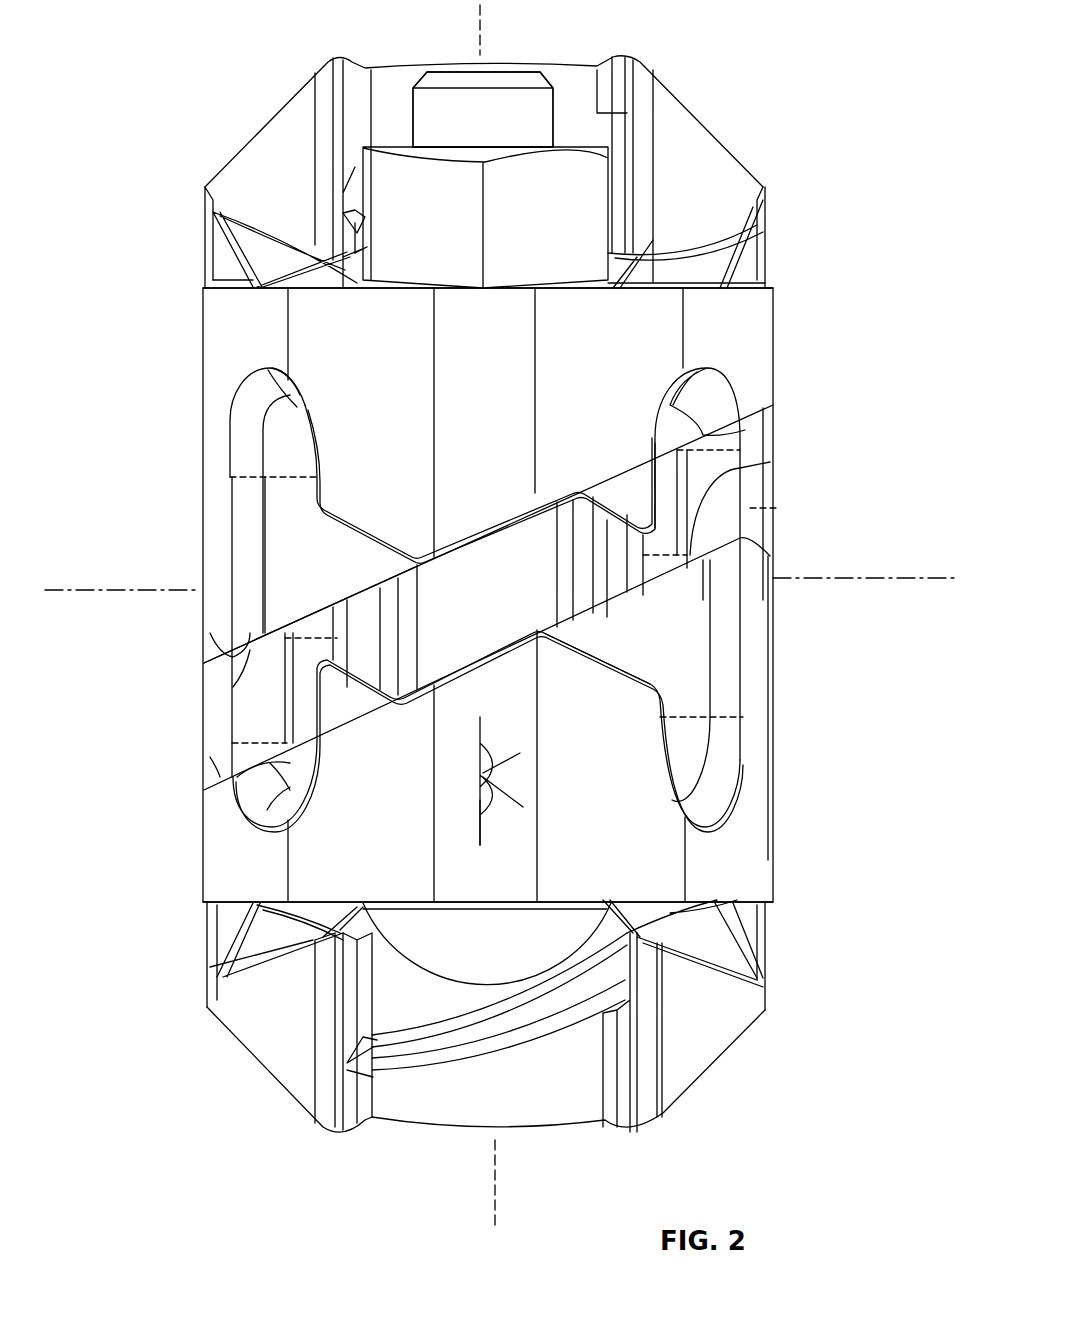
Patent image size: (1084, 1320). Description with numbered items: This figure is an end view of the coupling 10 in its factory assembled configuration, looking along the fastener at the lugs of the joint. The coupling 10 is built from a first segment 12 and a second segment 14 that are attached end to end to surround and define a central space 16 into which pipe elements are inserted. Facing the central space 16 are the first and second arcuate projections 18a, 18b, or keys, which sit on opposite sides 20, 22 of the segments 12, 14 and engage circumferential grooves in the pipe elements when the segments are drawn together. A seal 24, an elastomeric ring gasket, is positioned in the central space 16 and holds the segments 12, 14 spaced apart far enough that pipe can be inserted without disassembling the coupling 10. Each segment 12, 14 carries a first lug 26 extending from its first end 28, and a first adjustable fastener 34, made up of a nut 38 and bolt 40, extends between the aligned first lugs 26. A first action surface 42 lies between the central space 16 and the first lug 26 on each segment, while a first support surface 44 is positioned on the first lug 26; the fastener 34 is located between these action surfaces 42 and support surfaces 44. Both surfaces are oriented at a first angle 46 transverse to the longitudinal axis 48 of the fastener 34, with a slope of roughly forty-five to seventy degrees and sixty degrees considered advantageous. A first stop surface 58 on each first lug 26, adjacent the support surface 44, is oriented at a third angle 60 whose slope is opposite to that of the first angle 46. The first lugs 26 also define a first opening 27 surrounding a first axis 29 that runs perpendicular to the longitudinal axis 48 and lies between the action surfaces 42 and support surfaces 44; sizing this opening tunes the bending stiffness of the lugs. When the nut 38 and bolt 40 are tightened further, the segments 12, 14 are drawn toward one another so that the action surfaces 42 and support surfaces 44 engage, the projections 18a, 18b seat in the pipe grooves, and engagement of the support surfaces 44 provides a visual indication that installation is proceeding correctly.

The coupling 10 is at (873, 157).
The first segment 12 is at (417, 1117).
The second segment 14 is at (700, 137).
The central space 16 is at (337, 640).
The first arcuate projection 18a is at (217, 680).
The second arcuate projection 18b is at (752, 523).
The first side 20 is at (200, 360).
The second side 22 is at (772, 858).
The seal 24 is at (347, 630).
The first lug 26 is at (748, 325).
The first opening 27 is at (237, 777).
The first end 28 is at (693, 260).
The first axis 29 is at (900, 580).
The first adjustable fastener 34 is at (503, 93).
The nut 38 is at (555, 168).
The bolt 40 is at (483, 109).
The first action surface 42 is at (763, 430).
The first support surface 44 is at (503, 536).
The first angle 46 is at (495, 743).
The longitudinal axis 48 is at (497, 1183).
The first stop surface 58 is at (657, 648).
The third angle 60 is at (492, 818).